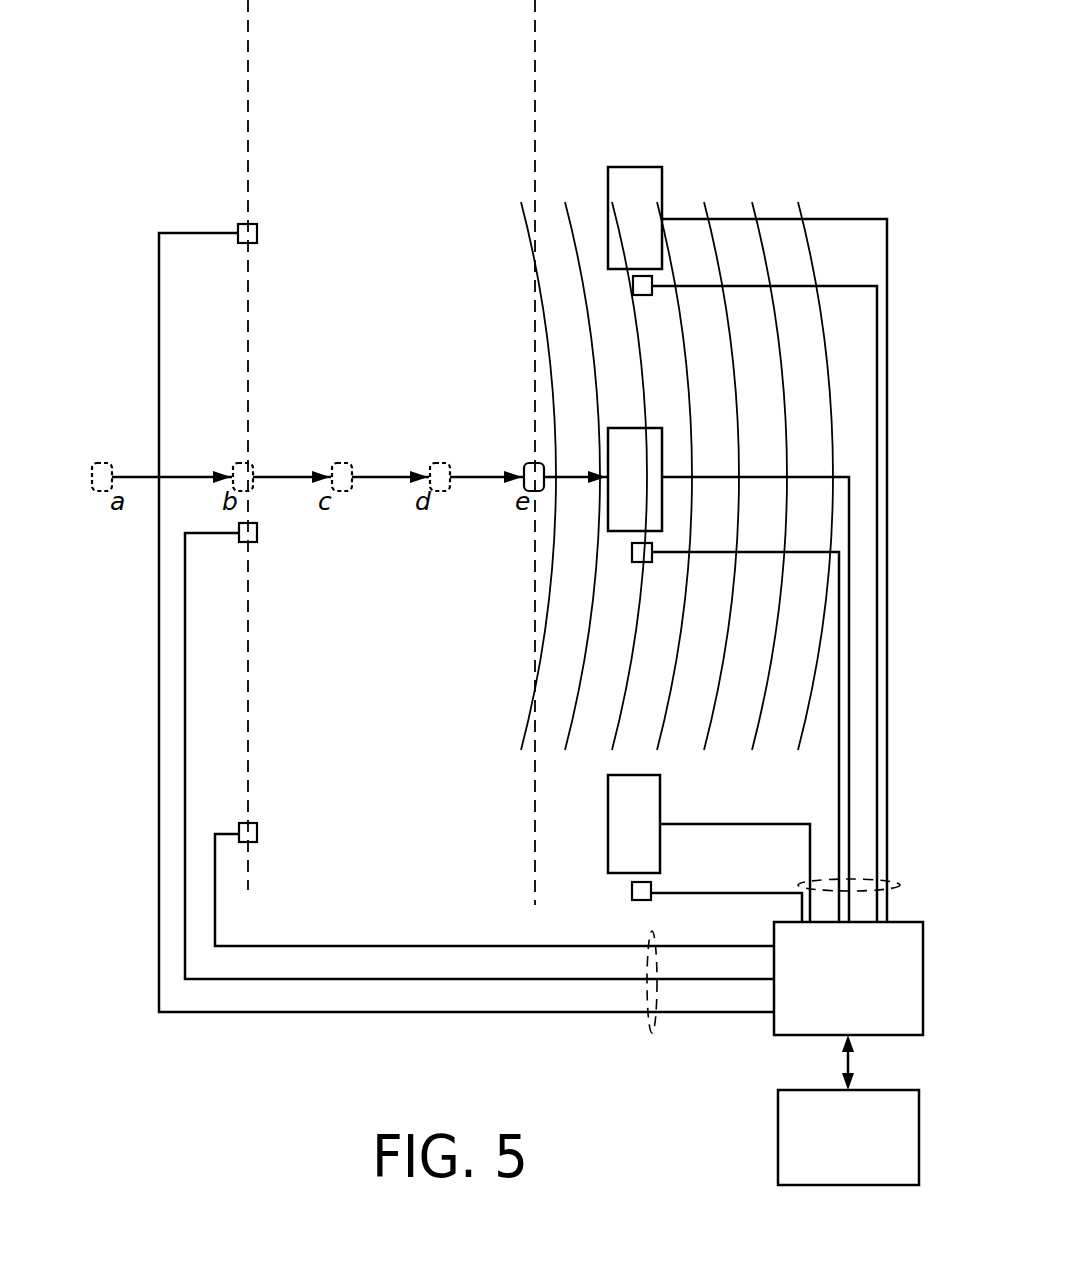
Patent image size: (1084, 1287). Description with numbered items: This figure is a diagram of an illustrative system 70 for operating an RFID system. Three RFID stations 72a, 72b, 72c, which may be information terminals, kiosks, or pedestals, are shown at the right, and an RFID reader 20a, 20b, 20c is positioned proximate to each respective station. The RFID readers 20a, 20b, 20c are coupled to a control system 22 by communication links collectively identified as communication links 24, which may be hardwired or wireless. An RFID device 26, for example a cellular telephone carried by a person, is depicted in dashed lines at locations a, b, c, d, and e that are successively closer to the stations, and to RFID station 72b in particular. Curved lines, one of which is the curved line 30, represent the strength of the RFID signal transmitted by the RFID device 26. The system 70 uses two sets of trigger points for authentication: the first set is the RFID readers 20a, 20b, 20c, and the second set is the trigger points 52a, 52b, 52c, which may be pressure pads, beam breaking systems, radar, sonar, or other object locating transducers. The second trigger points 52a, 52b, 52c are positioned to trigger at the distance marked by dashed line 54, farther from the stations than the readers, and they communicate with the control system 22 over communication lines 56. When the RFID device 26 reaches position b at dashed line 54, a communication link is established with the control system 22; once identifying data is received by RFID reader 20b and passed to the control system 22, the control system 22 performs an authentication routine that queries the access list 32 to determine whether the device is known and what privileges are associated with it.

The system for operating an RFID system 70 is at (812, 80).
The dashed line / distance of second trigger points 54 is at (248, 73).
The access list 32 is at (535, 75).
The curved line representing RFID signal strength 30 is at (520, 212).
The RFID device 26 is at (100, 458).
The second trigger point 52a is at (257, 224).
The second trigger point 52b is at (257, 542).
The second trigger point 52c is at (257, 823).
The RFID station 72a is at (662, 175).
The RFID station 72b is at (662, 438).
The RFID station 72c is at (660, 805).
The RFID reader 20a is at (653, 287).
The RFID reader 20b is at (652, 560).
The RFID reader 20c is at (651, 898).
The communication links 24 is at (797, 886).
The communication lines 56 is at (652, 1033).
The control system 22 is at (848, 978).